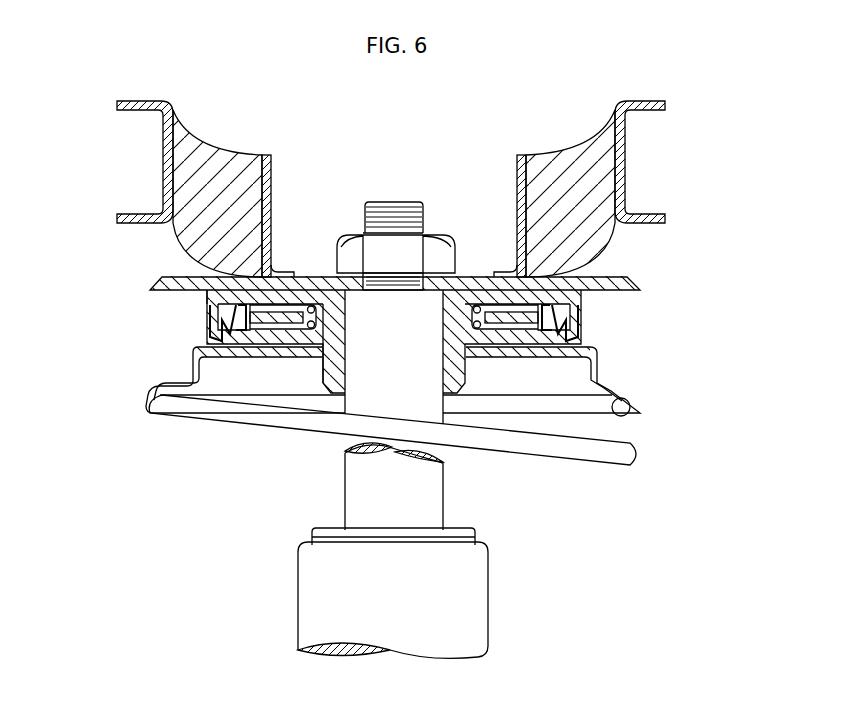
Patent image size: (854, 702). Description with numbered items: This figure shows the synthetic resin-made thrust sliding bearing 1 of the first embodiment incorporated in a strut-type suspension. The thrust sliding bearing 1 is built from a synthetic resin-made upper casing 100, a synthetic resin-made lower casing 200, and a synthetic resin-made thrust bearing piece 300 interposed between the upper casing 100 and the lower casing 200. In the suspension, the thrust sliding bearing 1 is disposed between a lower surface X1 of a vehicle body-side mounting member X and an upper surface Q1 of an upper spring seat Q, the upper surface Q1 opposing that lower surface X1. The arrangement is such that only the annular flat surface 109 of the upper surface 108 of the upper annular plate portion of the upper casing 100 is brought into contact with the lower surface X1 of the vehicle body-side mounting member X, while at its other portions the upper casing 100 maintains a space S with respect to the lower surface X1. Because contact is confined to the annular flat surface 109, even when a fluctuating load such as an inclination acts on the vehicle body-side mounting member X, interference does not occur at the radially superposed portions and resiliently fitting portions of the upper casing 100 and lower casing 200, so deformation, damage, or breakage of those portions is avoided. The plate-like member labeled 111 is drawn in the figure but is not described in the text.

The synthetic resin-made thrust sliding bearing 1 is at (600, 318).
The upper casing 100 is at (292, 298).
The upper surface 108 is at (492, 278).
The annular flat surface 109 is at (440, 297).
The plate 111 is at (613, 288).
The lower casing 200 is at (288, 338).
The thrust bearing piece 300 is at (277, 318).
The space S is at (215, 292).
The vehicle body-side mounting member X is at (341, 292).
The lower surface X1 is at (318, 298).
The upper spring seat Q is at (598, 360).
The upper surface Q1 is at (520, 340).